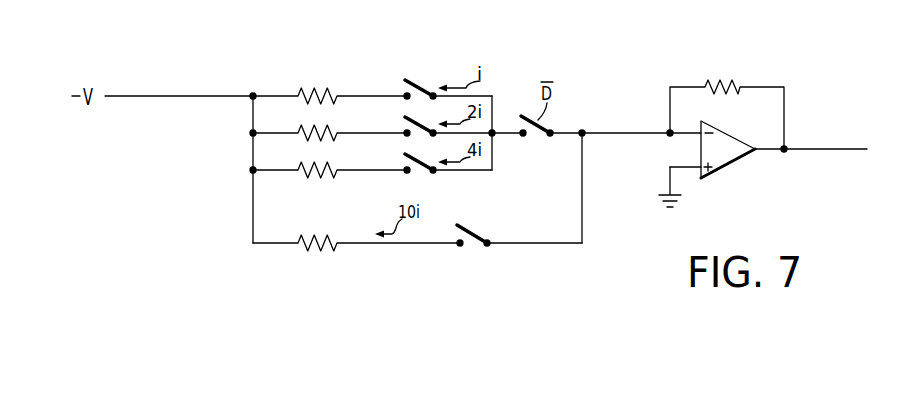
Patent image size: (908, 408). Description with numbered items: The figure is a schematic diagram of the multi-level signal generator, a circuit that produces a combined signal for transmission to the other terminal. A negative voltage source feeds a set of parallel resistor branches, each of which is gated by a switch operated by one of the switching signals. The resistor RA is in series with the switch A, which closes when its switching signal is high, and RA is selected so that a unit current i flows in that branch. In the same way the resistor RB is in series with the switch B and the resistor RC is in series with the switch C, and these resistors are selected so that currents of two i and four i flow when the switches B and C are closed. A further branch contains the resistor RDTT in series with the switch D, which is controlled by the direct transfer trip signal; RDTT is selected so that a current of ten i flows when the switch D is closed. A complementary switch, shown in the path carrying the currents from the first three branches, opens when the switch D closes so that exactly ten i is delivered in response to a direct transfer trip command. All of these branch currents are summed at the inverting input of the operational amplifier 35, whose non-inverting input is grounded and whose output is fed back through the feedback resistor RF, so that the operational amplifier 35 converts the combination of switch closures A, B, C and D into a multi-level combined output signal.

The operational amplifier 35 is at (725, 169).
The resistor RA is at (303, 92).
The resistor RB is at (303, 129).
The resistor RC is at (303, 166).
The resistor RDTT is at (304, 240).
The feedback resistor RF is at (727, 101).
The switch A is at (414, 88).
The switch B is at (414, 125).
The switch C is at (414, 162).
The switch D is at (471, 236).